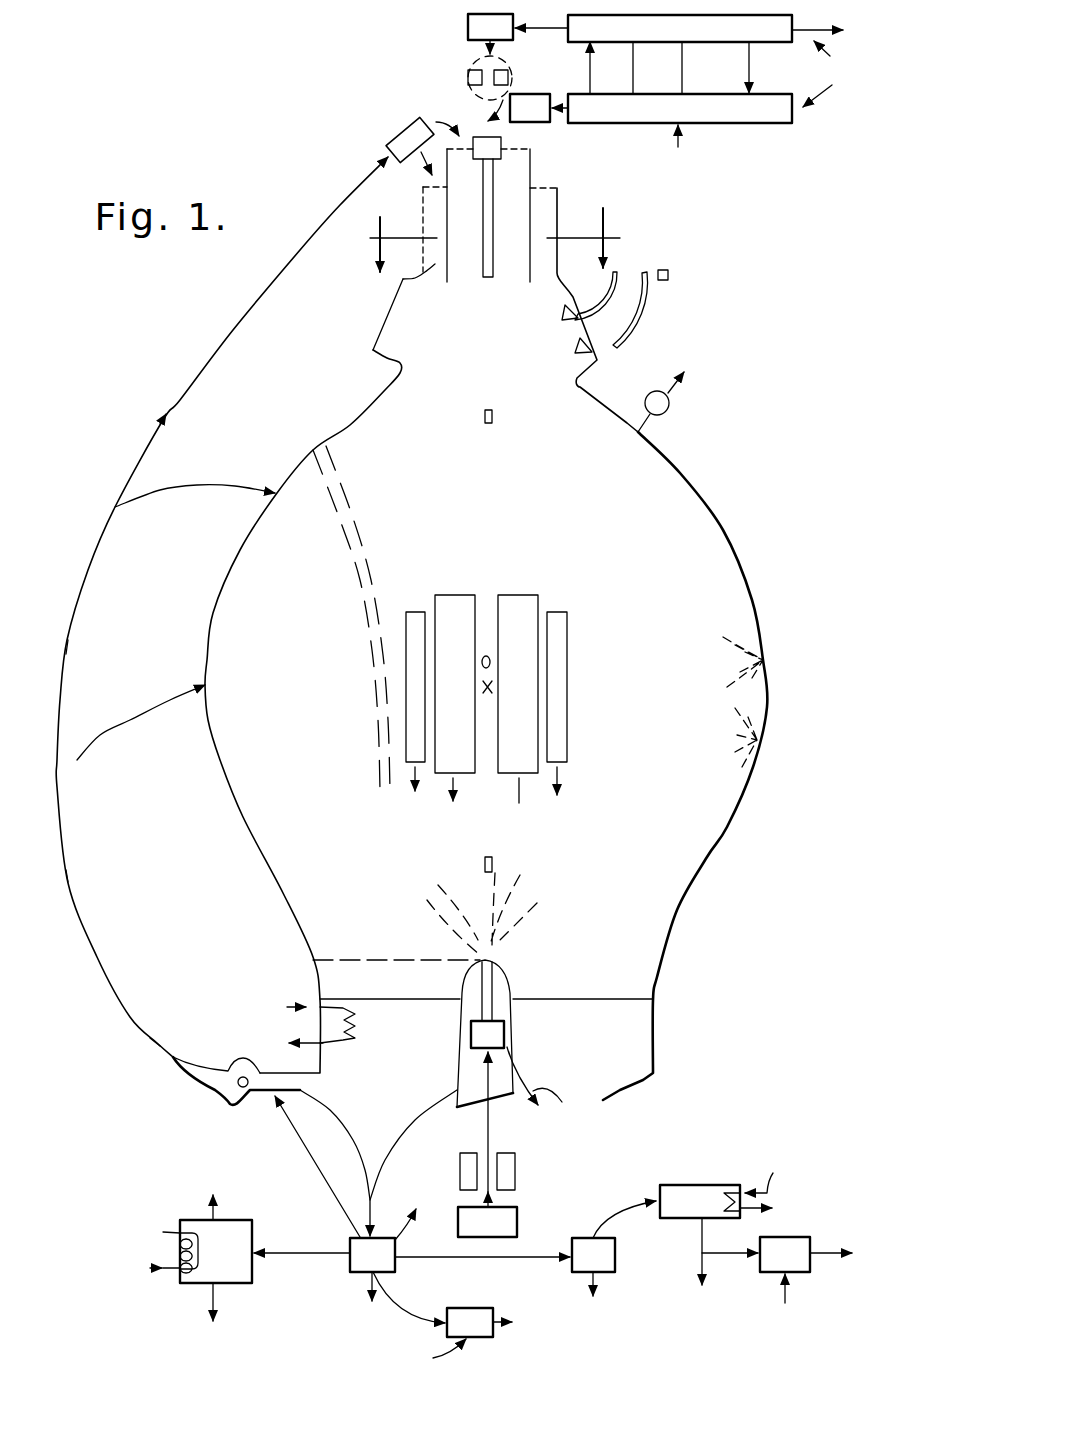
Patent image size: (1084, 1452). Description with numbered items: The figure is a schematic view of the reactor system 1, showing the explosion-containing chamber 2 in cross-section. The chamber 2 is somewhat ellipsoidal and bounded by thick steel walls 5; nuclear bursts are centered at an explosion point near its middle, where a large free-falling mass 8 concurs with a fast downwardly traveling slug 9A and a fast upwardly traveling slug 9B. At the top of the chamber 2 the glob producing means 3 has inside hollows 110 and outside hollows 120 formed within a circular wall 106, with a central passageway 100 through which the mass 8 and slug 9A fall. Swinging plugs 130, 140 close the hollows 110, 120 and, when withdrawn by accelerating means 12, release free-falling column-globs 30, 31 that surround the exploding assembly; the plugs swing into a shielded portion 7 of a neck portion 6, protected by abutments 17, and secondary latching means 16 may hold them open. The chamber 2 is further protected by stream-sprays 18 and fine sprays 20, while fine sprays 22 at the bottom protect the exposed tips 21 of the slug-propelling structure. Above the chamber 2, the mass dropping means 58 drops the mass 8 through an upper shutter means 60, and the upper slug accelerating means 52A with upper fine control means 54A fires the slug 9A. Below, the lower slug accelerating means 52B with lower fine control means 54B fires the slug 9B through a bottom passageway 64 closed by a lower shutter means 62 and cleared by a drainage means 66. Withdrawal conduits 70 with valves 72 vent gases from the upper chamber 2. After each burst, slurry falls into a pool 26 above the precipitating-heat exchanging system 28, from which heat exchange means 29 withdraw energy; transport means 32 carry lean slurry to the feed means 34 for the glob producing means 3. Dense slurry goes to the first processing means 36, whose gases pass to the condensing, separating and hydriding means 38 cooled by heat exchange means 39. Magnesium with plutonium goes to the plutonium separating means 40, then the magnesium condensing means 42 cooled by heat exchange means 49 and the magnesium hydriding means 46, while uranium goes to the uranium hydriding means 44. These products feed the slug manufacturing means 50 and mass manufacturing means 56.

The reactor system 1 is at (304, 411).
The explosion-containing chamber 2 is at (583, 759).
The glob producing means 3 is at (570, 207).
The walls 5 is at (729, 533).
The neck portion 6 is at (404, 652).
The shielded portion 7 is at (575, 363).
The free-falling mass 8 is at (487, 655).
The downwardly traveling slug 9A is at (492, 420).
The upwardly traveling slug 9B is at (493, 857).
The accelerating means 12 is at (657, 312).
The secondary latching means 16 is at (668, 275).
The abutments 17 is at (584, 380).
The stream-sprays 18 is at (360, 597).
The fine sprays 20 is at (727, 737).
The tips 21 is at (493, 960).
The fine sprays 22 is at (446, 893).
The pool 26 is at (390, 1021).
The precipitating-heat exchanging system 28 is at (385, 1104).
The heat exchange means 29 is at (305, 1012).
The column-globs 30 is at (457, 594).
The column-globs 31 is at (413, 611).
The transport means 32 is at (194, 1078).
The feed means 34 is at (422, 146).
The first processing means 36 is at (412, 1207).
The condensing separating and hydriding means 38 is at (216, 1268).
The heat exchange means 39 is at (162, 1233).
The plutonium separating means 40 is at (614, 1261).
The magnesium condensing means 42 is at (709, 1252).
The uranium hydriding means 44 is at (482, 1337).
The magnesium hydriding means 46 is at (836, 1281).
The heat exchange means 49 is at (764, 1182).
The slug manufacturing means 50 is at (739, 61).
The upper slug accelerating means 52A is at (518, 27).
The lower slug accelerating means 52B is at (487, 1144).
The upper fine control means 54A is at (468, 73).
The lower fine control means 54B is at (515, 1177).
The mass manufacturing means 56 is at (680, 144).
The mass dropping means 58 is at (539, 108).
The upper shutter means 60 is at (502, 140).
The lower shutter means 62 is at (487, 1034).
The bottom passageway 64 is at (489, 992).
The drainage means 66 is at (544, 1088).
The withdrawal conduits 70 is at (655, 420).
The valves 72 is at (670, 408).
The central passageway 100 is at (483, 247).
The circular wall 106 is at (532, 172).
The inside hollows 110 is at (450, 202).
The outside hollows 120 is at (394, 286).
The swinging plug 130 is at (580, 348).
The swinging plug 140 is at (567, 316).